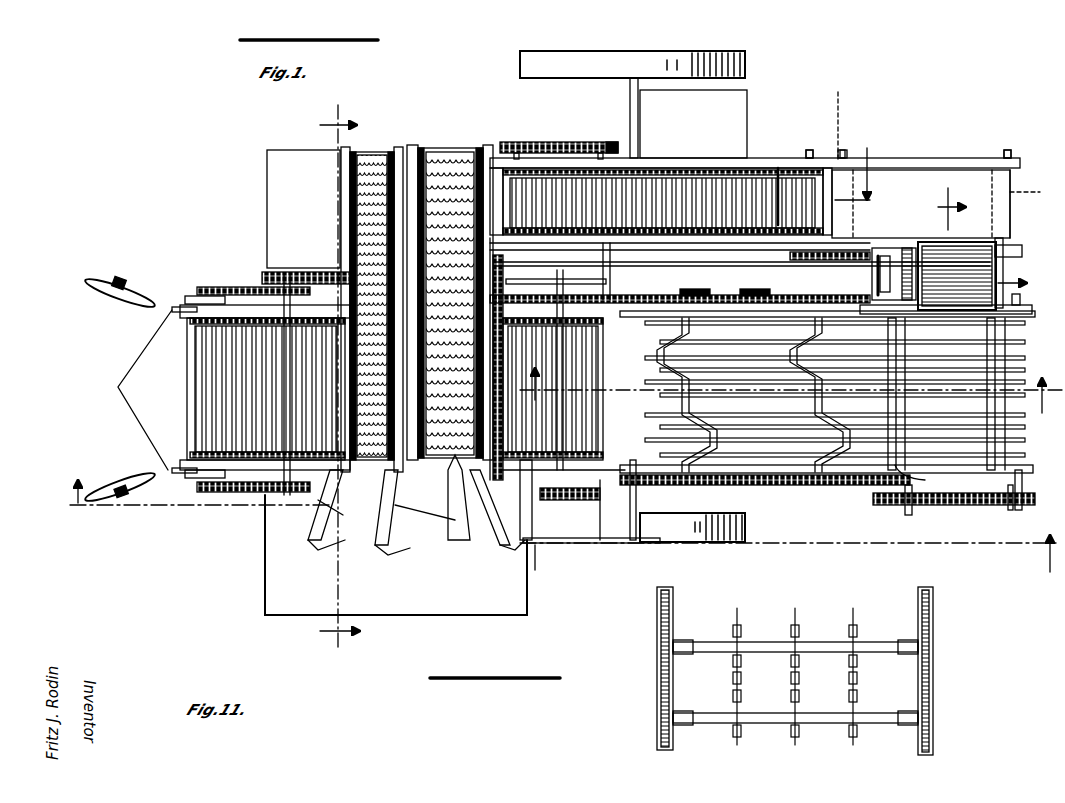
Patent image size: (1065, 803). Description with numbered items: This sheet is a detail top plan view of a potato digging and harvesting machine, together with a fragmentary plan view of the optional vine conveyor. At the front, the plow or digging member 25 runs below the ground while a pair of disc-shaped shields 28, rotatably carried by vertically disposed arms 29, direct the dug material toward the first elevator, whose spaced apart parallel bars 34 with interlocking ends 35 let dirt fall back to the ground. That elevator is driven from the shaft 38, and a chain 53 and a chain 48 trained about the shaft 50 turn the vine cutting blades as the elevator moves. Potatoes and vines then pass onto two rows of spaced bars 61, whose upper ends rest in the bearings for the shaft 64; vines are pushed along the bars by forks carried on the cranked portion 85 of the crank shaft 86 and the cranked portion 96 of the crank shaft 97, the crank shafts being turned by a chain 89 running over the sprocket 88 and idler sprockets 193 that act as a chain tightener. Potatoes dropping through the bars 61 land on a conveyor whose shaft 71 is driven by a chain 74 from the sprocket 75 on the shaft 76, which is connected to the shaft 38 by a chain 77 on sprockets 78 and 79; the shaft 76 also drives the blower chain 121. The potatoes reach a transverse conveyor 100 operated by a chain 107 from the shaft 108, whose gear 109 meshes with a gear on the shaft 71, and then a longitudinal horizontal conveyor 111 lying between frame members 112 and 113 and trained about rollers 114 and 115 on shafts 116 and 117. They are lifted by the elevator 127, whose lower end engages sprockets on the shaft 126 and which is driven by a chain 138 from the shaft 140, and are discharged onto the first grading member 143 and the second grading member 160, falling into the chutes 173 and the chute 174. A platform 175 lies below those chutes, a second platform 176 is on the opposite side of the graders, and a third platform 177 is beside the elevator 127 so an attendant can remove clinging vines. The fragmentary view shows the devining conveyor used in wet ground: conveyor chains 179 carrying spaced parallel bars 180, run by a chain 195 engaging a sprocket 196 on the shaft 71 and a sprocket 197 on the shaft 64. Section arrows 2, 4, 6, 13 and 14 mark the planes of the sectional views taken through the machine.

In FIG. 1, the section line 2- 2 is at (558, 537).
In FIG. 1, the section line 4- 4 is at (792, 401).
In FIG. 1, the section line 6- 6 is at (328, 377).
In FIG. 1, the section line 13- 13 is at (778, 168).
In FIG. 1, the section line 14- 14 is at (981, 241).
In FIG. 1, the plow or digging member 25 is at (130, 400).
In FIG. 1, the disc-shaped shields 28 is at (145, 296).
In FIG. 1, the vertically disposed arms 29 is at (122, 280).
In FIG. 1, the spaced apart parallel bars 34 is at (202, 368).
In FIG. 1, the interlocking ends 35 is at (185, 472).
In FIG. 1, the shaft 38 is at (580, 500).
In FIG. 1, the chain 48 is at (232, 287).
In FIG. 1, the shaft 50 is at (287, 495).
In FIG. 1, the chain 53 is at (310, 272).
In FIG. 1, the spaced bars 61 is at (1020, 352).
In FIG. 1, the shaft or bar 64 is at (1025, 482).
In FIG. 1, the shaft 71 is at (925, 480).
In FIG. 1, the chain 74 is at (840, 485).
In FIG. 1, the sprocket 75 is at (539, 567).
In FIG. 1, the shaft 76 is at (565, 358).
In FIG. 1, the chain 77 is at (600, 500).
In FIG. 1, the sprocket 78 is at (560, 500).
In FIG. 1, the sprocket 79 is at (655, 480).
In FIG. 1, the cranked portion 85 is at (717, 432).
In FIG. 1, the crank shaft 86 is at (680, 398).
In FIG. 1, the sprocket 88 is at (700, 289).
In FIG. 1, the chain 89 is at (748, 289).
In FIG. 1, the cranked portion 96 is at (850, 435).
In FIG. 1, the crank shaft 97 is at (822, 378).
In FIG. 1, the transverse conveyor 100 is at (979, 274).
In FIG. 1, the chain 107 is at (906, 248).
In FIG. 1, the shaft 108 is at (890, 262).
In FIG. 1, the gear 109 is at (878, 258).
In FIG. 1, the longitudinal and horizontal conveyor 111 is at (945, 170).
In FIG. 1, the frame member 112 is at (816, 262).
In FIG. 1, the frame member 113 is at (915, 158).
In FIG. 1, the roller 114 is at (1037, 191).
In FIG. 1, the roller 115 is at (838, 92).
In FIG. 1, the shaft 116 is at (1007, 150).
In FIG. 1, the shaft 117 is at (843, 150).
In FIG. 1, the chain 121 is at (540, 272).
In FIG. 1, the shaft 126 is at (809, 150).
In FIG. 1, the elevator 127 is at (696, 168).
In FIG. 1, the chain 138 is at (568, 142).
In FIG. 1, the shaft 140 is at (612, 142).
In FIG. 1, the movable grading member 143 is at (450, 279).
In FIG. 1, the second grading member 160 is at (370, 152).
In FIG. 1, the chutes or receiving members 173 is at (395, 548).
In FIG. 1, the receiving chute 174 is at (326, 517).
In FIG. 1, the platform 175 is at (387, 615).
In FIG. 1, the second platform 176 is at (267, 180).
In FIG. 1, the third platform 177 is at (747, 100).
In FIG. 11, the conveyor chains 179 is at (673, 598).
In FIG. 11, the parallel bars 180 is at (707, 642).
In FIG. 1, the idler sprockets 193 is at (600, 295).
In FIG. 1, the chain 195 is at (965, 507).
In FIG. 1, the sprocket 196 is at (895, 505).
In FIG. 1, the sprocket 197 is at (1015, 505).